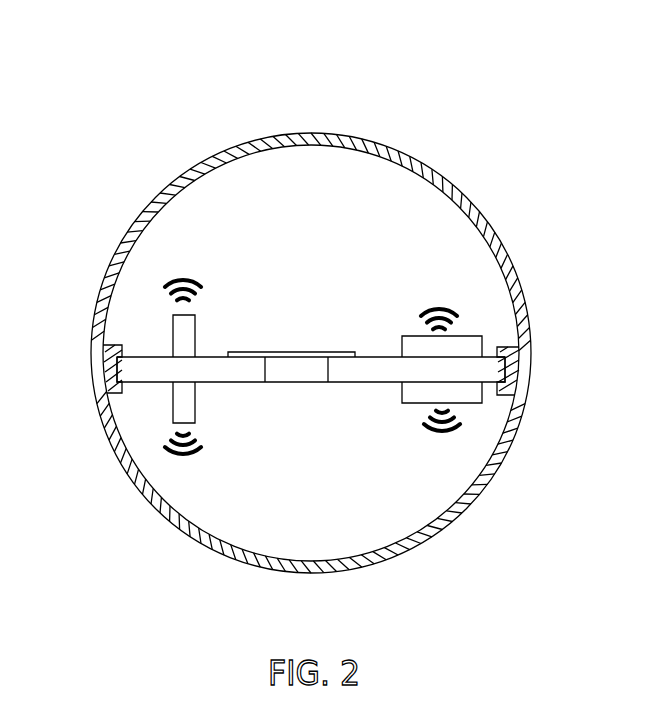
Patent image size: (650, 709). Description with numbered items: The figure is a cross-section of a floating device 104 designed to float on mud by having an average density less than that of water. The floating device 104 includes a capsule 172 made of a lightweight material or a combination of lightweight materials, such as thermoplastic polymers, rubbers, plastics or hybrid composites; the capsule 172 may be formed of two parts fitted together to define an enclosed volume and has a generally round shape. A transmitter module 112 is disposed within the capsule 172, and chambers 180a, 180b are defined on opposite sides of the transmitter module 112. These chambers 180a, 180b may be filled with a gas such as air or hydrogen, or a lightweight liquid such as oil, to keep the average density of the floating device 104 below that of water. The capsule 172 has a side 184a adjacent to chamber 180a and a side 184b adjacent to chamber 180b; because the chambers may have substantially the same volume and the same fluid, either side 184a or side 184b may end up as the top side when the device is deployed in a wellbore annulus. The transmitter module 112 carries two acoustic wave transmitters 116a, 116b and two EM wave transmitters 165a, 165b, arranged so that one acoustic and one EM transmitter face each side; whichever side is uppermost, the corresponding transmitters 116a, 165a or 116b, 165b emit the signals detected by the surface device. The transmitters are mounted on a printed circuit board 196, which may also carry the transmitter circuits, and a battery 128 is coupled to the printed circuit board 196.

The floating device 104 is at (277, 70).
The transmitter module 112 is at (375, 382).
The transmitter 116a is at (182, 342).
The transmitter 116b is at (180, 400).
The battery 128 is at (300, 363).
The transmitter 165a is at (475, 345).
The transmitter 165b is at (468, 393).
The capsule 172 is at (458, 192).
The chamber 180a is at (240, 185).
The chamber 180b is at (273, 543).
The side 184a is at (377, 145).
The side 184b is at (332, 567).
The printed circuit board 196 is at (240, 373).